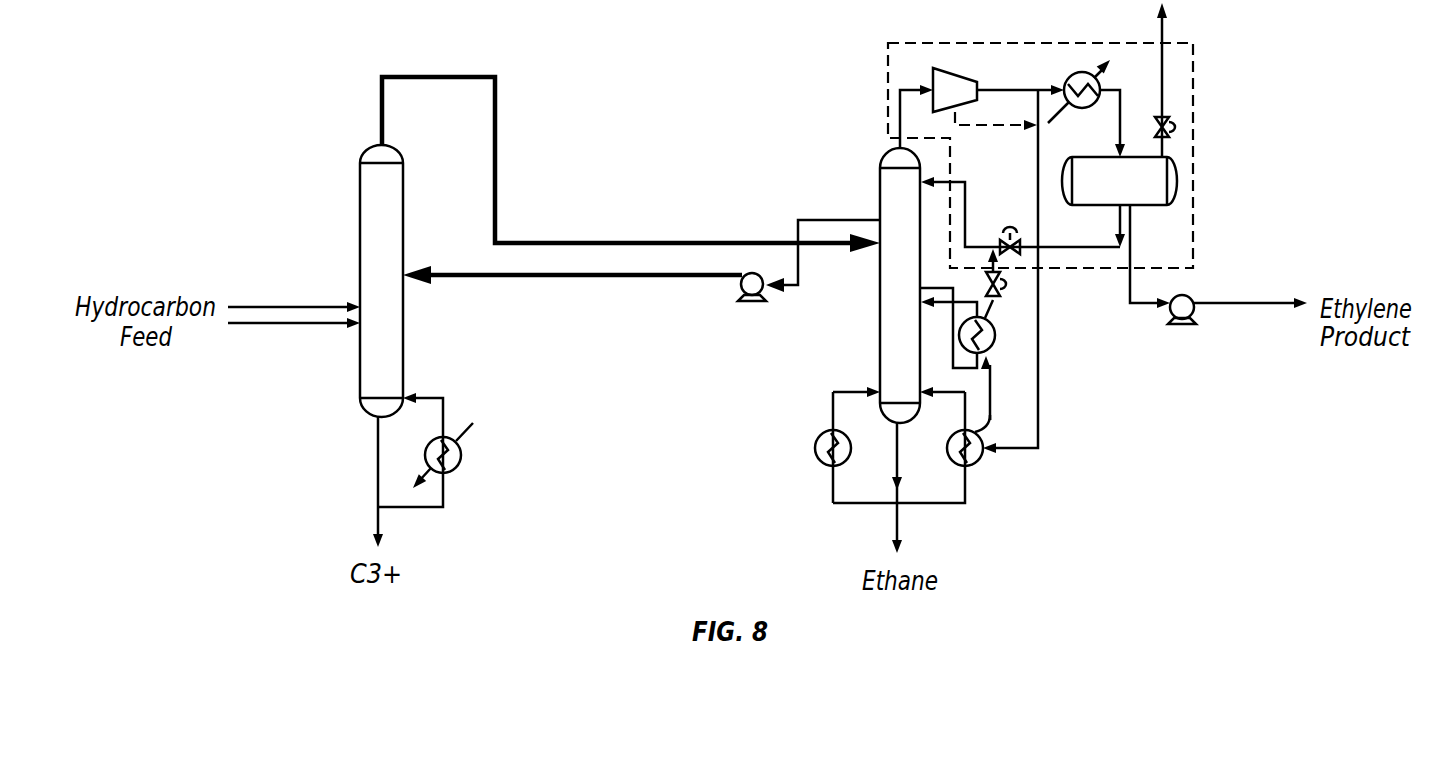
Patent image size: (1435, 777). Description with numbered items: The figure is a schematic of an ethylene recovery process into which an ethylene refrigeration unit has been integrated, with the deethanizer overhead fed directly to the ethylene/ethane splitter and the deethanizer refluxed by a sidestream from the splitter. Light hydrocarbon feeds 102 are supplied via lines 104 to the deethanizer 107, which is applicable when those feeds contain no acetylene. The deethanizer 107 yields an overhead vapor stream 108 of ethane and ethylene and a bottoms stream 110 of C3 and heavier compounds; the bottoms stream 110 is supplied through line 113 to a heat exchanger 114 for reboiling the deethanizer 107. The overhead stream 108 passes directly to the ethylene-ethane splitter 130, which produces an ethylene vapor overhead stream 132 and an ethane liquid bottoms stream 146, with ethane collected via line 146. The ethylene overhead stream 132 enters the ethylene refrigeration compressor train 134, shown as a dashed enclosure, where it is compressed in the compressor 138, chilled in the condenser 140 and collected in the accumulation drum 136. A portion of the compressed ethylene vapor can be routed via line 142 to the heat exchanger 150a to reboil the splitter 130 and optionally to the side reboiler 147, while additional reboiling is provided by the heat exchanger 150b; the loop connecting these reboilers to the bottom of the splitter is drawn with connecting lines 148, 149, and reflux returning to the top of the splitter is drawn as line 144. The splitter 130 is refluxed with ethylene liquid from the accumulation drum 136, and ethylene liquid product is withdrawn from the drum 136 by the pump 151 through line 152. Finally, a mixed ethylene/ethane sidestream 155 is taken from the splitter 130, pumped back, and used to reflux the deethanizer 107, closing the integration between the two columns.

The light hydrocarbon feed 102 is at (316, 305).
The feed line 104 is at (316, 326).
The deethanizer 107 is at (360, 215).
The overhead vapor stream 108 is at (603, 241).
The bottoms stream 110 is at (378, 467).
The line 113 is at (420, 509).
The heat exchanger 114 is at (456, 475).
The ethylene-ethane splitter 130 is at (880, 200).
The ethylene vapor overhead stream 132 is at (900, 130).
The ethylene refrigeration compressor train 134 is at (1197, 82).
The accumulation drum 136 is at (1119, 181).
The compressor 138 is at (955, 68).
The condenser 140 is at (1083, 72).
The line 142 is at (1040, 280).
The reflux line 144 is at (967, 207).
The ethane liquid bottoms stream 146 is at (893, 520).
The side reboiler 147 is at (990, 340).
The reboiler line 148 is at (930, 505).
The reboiler line 149 is at (830, 488).
The heat exchanger 150a is at (983, 462).
The heat exchanger 150b is at (818, 440).
The pump 151 is at (1190, 293).
The line 152 is at (1150, 306).
The mixed ethylene/ethane sidestream 155 is at (580, 278).